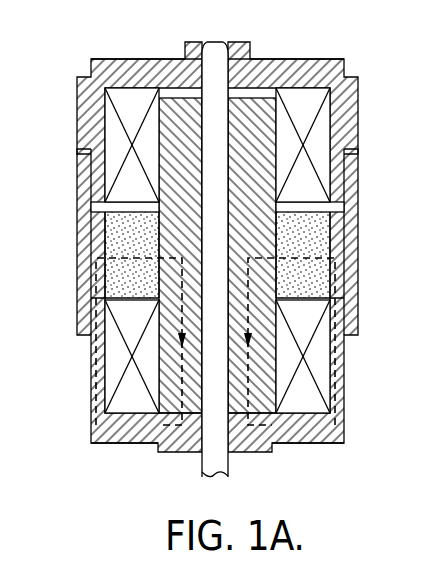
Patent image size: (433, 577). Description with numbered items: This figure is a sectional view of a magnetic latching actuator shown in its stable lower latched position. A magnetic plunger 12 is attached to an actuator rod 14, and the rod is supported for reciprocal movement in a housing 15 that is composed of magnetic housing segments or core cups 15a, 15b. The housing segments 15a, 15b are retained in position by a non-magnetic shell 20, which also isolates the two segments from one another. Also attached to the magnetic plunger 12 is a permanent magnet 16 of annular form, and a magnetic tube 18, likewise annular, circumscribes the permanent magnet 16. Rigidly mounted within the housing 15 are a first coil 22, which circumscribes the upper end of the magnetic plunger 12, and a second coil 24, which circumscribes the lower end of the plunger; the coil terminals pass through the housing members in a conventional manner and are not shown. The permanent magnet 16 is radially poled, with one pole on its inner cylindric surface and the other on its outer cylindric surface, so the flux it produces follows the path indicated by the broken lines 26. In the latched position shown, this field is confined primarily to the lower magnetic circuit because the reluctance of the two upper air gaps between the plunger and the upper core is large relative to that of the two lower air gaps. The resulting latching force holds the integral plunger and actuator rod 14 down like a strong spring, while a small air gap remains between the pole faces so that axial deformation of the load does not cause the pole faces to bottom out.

The magnetic plunger 12 is at (251, 193).
The actuator rod 14 is at (210, 50).
The housing 15 is at (363, 146).
The magnetic housing segment 15a is at (293, 70).
The magnetic housing segment 15b is at (148, 438).
The permanent magnet 16 is at (312, 284).
The magnetic tube 18 is at (93, 238).
The non-magnetic shell 20 is at (357, 238).
The first coil 22 is at (308, 115).
The second coil 24 is at (307, 324).
The broken lines 26 is at (121, 422).